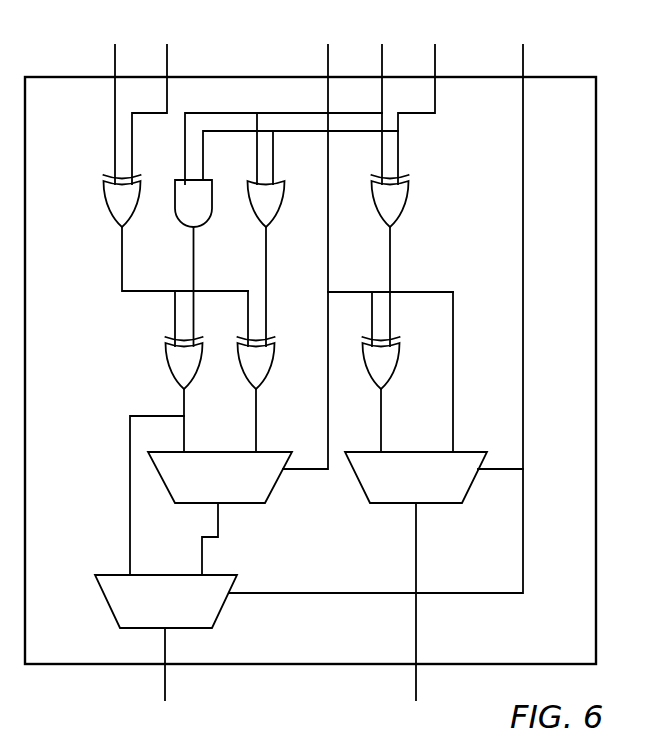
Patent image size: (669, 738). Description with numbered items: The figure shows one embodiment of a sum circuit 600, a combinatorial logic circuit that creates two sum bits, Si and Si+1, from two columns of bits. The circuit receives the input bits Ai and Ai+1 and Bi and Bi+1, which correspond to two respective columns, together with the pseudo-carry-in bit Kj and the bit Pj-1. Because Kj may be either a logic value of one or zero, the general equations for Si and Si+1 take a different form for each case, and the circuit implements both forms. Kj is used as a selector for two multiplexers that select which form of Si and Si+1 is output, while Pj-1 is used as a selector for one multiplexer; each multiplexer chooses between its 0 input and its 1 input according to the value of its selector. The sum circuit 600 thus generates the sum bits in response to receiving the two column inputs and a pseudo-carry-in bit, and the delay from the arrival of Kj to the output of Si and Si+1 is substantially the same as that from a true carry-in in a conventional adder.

The sum circuit 600 is at (310, 373).
The multiplexer 0 input 0 is at (291, 540).
The multiplexer 1 input 1 is at (285, 496).